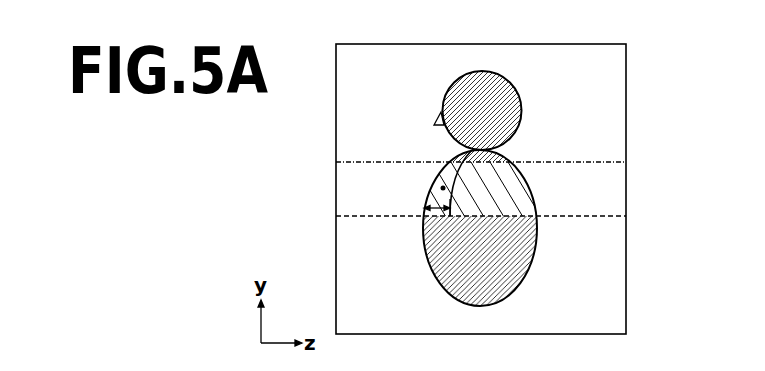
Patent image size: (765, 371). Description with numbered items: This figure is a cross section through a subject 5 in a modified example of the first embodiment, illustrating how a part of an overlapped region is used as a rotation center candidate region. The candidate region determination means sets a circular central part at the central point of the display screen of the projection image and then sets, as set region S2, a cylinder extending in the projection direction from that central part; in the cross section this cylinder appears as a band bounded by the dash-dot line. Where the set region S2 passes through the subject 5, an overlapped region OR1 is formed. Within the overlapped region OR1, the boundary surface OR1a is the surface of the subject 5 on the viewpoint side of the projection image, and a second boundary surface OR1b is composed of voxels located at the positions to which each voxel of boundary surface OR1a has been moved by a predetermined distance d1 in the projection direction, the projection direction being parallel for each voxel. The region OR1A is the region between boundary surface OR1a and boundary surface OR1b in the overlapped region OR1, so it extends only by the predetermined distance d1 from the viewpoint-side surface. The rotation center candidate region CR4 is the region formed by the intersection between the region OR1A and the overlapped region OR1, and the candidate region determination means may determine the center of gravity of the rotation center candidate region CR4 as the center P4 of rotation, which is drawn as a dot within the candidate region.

The subject 5 is at (506, 78).
The overlapped region OR1 is at (515, 200).
The set region S2 is at (612, 165).
The rotation center candidate region CR4 is at (453, 163).
The region OR1A is at (432, 176).
The center of rotation P4 is at (440, 187).
The boundary surface OR1a is at (431, 190).
The boundary surface OR1b is at (436, 206).
The predetermined distance d1 is at (436, 214).